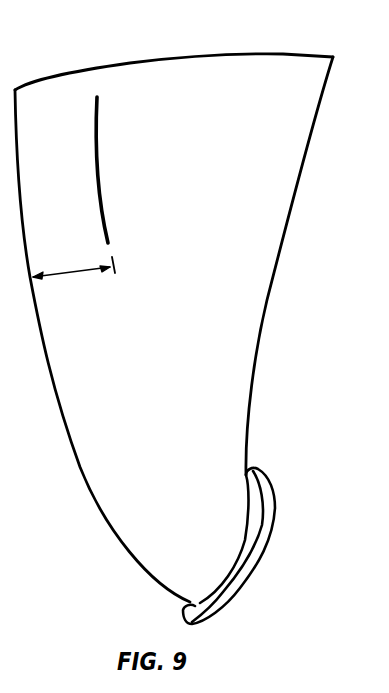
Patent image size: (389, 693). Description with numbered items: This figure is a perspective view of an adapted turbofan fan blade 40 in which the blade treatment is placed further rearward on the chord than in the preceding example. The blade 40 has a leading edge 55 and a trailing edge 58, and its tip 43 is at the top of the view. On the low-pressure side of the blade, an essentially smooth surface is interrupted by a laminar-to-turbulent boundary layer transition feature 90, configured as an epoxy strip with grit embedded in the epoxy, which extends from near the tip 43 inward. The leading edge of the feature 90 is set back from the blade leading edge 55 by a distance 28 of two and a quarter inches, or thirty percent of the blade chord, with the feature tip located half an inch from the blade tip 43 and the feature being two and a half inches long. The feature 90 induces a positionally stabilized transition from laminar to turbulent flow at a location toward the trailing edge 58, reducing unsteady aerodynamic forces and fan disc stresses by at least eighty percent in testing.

The tip of the blade 43 is at (171, 54).
The trailing edge 58 is at (279, 250).
The leading edge 55 is at (60, 405).
The laminar-to-turbulent boundary layer transition feature 90 is at (97, 155).
The distance 28 is at (70, 273).
The turbofan fan blade 40 is at (153, 367).